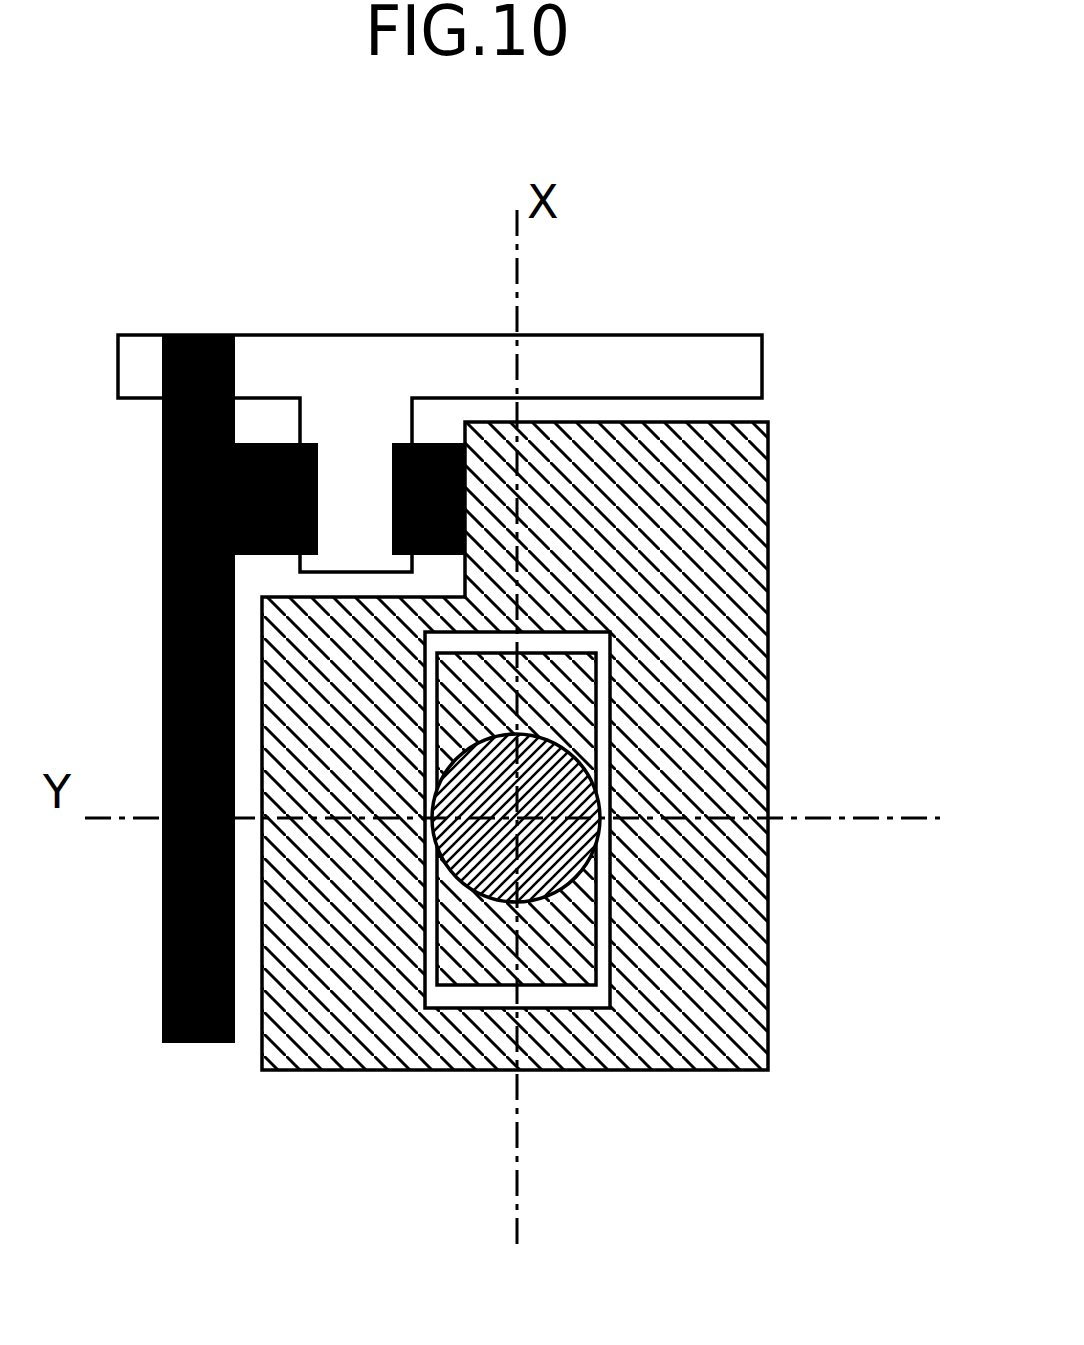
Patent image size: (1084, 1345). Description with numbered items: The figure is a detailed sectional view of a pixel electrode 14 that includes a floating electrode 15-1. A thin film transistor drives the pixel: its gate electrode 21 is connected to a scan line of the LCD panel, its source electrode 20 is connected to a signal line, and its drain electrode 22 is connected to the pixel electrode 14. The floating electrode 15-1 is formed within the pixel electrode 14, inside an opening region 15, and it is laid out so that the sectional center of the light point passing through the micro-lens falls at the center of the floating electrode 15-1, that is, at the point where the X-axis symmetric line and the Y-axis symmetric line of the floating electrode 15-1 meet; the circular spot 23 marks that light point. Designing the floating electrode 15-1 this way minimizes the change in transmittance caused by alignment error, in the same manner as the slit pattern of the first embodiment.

The pixel electrode 14 is at (745, 690).
The opening 15 is at (450, 997).
The floating electrode 15-1 is at (572, 972).
The source electrode 20 is at (215, 333).
The gate electrode 21 is at (735, 355).
The drain electrode 22 is at (470, 513).
The contact hole 23 is at (596, 868).